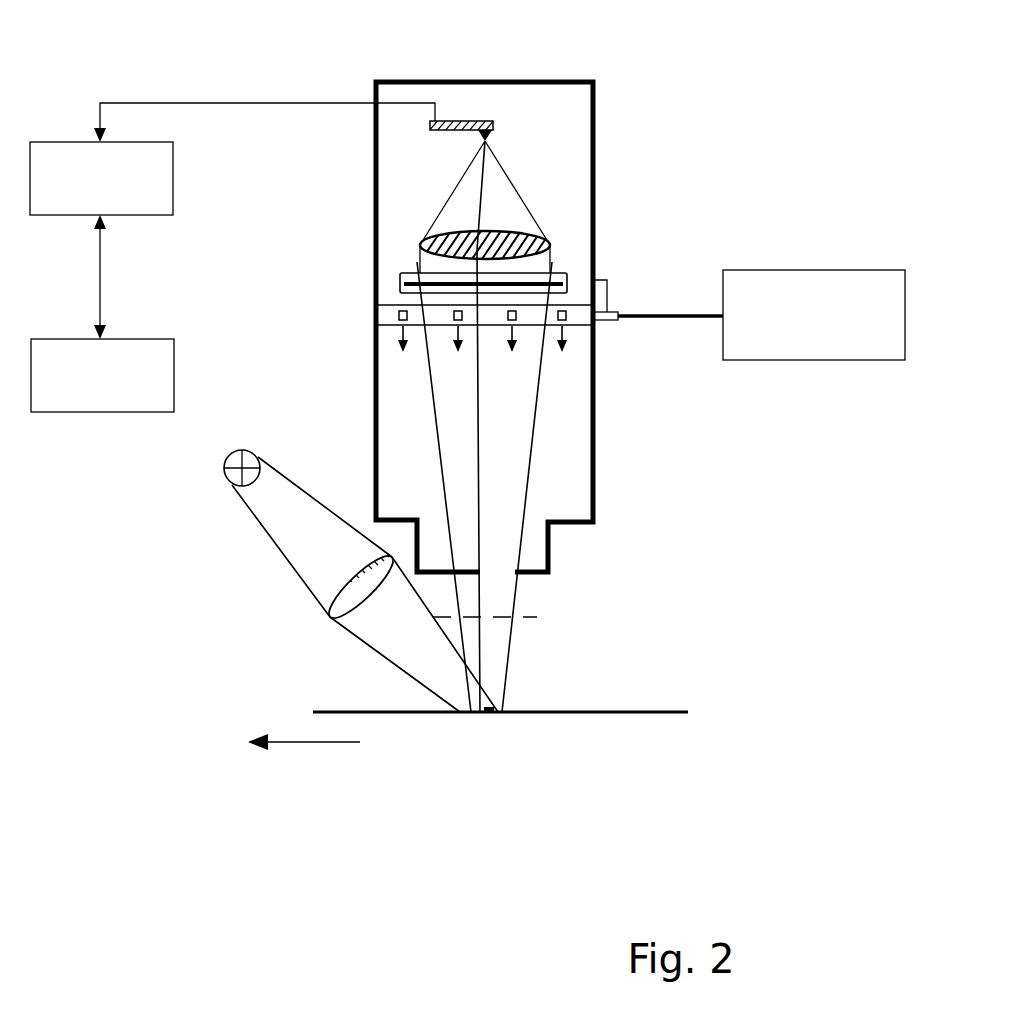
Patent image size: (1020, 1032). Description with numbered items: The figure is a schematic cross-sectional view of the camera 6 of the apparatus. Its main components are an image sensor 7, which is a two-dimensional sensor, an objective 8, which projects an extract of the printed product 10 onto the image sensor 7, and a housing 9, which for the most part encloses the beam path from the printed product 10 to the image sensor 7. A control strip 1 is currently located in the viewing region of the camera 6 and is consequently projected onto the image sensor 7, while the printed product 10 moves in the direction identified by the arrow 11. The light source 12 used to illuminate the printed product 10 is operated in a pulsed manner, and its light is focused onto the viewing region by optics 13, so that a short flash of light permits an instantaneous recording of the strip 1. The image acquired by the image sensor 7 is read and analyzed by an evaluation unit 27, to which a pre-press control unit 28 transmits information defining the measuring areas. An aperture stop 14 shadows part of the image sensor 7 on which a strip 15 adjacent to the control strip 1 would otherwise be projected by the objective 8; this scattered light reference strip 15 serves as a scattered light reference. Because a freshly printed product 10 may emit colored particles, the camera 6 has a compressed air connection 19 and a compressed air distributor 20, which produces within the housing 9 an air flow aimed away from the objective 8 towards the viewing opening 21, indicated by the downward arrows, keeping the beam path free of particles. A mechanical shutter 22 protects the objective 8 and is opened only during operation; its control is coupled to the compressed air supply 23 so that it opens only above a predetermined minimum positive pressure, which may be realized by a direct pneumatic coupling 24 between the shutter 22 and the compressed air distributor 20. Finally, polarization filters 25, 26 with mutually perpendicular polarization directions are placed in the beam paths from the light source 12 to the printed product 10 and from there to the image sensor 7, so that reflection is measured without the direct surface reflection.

The control strip 1 is at (497, 706).
The camera 6 is at (317, 185).
The image sensor 7 is at (458, 120).
The objective 8 is at (545, 240).
The housing 9 is at (595, 480).
The printed product 10 is at (610, 712).
The arrow 11 is at (322, 742).
The light source 12 is at (232, 454).
The optics 13 is at (343, 583).
The aperture stop 14 is at (462, 587).
The scattered light reference strip 15 is at (475, 713).
The compressed air connection 19 is at (620, 312).
The compressed air distributor 20 is at (387, 319).
The viewing opening 21 is at (495, 573).
The mechanical shutter 22 is at (400, 282).
The compressed air supply 23 is at (835, 270).
The direct pneumatic coupling 24 is at (607, 280).
The polarization filter 25 is at (390, 655).
The polarization filter 26 is at (528, 617).
The evaluation unit 27 is at (62, 142).
The pre-press control unit 28 is at (48, 339).